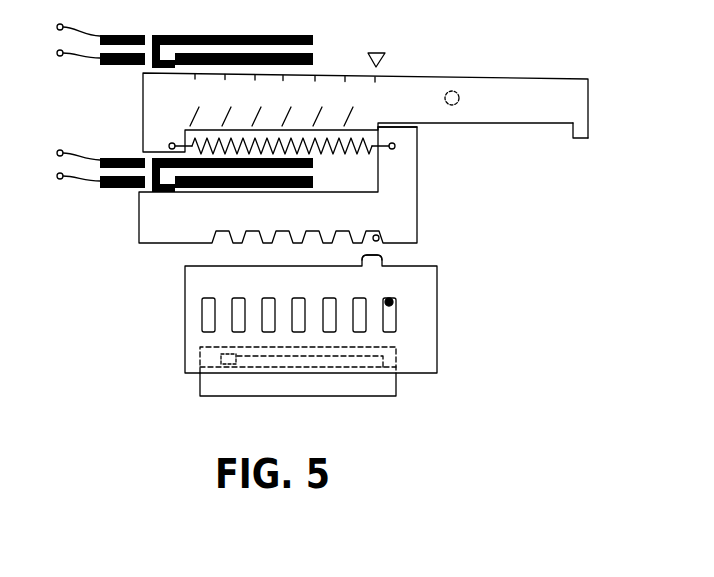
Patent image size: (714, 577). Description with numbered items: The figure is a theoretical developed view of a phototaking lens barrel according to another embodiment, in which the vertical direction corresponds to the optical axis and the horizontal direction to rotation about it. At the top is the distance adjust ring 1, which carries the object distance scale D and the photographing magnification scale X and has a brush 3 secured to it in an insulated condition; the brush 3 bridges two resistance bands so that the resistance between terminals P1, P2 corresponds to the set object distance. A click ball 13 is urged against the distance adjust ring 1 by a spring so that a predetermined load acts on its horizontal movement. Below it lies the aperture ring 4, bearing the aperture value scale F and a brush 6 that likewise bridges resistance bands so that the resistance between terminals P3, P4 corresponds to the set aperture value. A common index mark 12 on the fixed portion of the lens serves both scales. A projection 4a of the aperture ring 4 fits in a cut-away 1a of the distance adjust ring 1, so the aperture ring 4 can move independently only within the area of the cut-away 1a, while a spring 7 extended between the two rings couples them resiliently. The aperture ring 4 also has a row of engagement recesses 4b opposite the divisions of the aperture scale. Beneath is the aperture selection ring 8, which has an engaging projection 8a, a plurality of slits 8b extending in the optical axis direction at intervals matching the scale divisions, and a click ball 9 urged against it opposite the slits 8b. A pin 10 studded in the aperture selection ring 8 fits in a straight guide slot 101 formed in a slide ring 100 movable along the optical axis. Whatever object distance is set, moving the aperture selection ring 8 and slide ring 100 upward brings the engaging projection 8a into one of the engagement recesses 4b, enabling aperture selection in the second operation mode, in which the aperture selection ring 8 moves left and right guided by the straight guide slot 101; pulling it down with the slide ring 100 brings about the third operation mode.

The distance adjust ring 1 is at (142, 107).
The cut-away 1a is at (536, 126).
The brush 3 is at (148, 36).
The aperture ring 4 is at (139, 224).
The projection 4a is at (412, 152).
The engagement recesses 4b is at (380, 238).
The brush 6 is at (146, 189).
The spring 7 is at (334, 150).
The aperture selection ring 8 is at (185, 330).
The engaging projection 8a is at (371, 264).
The slits 8b is at (202, 301).
The click ball 9 is at (395, 302).
The pin 10 is at (222, 365).
The common index mark 12 is at (384, 59).
The click ball 13 is at (455, 91).
The slide ring 100 is at (302, 396).
The straight guide slot 101 is at (364, 376).
The terminal P1 is at (63, 29).
The terminal P2 is at (63, 54).
The terminal P3 is at (63, 154).
The terminal P4 is at (63, 178).